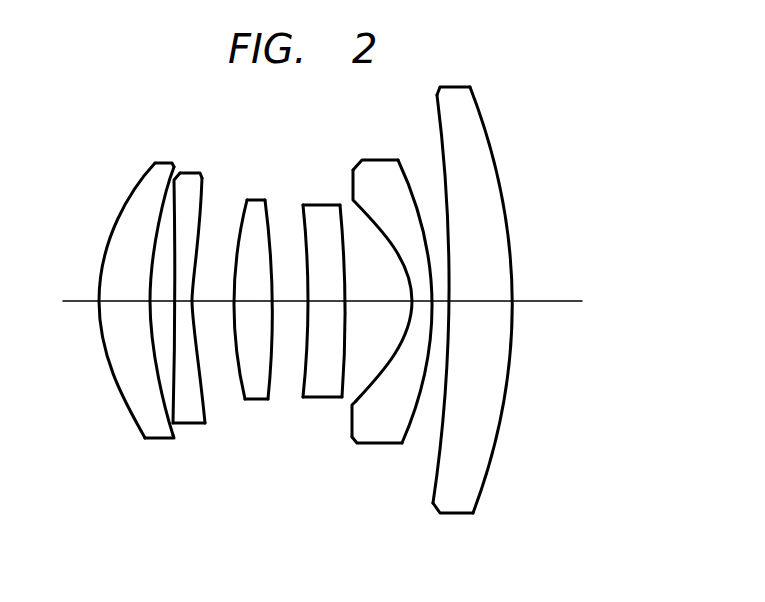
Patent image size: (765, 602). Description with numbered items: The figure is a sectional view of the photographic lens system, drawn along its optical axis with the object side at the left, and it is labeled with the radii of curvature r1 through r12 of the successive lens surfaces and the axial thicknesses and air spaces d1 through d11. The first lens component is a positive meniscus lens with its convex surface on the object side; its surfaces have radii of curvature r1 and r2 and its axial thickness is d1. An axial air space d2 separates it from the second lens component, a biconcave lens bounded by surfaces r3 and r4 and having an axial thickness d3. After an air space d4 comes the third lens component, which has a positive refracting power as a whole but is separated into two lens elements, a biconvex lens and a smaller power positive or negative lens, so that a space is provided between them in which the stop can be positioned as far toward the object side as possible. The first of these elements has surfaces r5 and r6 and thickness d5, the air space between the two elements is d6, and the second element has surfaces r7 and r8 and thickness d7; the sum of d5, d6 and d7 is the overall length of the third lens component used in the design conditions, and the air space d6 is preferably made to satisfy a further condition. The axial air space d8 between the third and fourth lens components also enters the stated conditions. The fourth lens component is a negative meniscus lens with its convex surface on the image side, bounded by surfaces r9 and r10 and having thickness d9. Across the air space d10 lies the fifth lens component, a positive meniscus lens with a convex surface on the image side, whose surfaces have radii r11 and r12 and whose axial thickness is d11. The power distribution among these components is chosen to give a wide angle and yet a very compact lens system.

The axial thickness of first lens d1 is at (112, 300).
The axial air space between first and second lenses d2 is at (158, 300).
The axial thickness of second lens d3 is at (183, 300).
The axial air space between second and third lenses d4 is at (210, 300).
The axial thickness of first element of third lens component d5 is at (252, 301).
The air space between the two lens elements of the third lens component d6 is at (290, 301).
The axial thickness of second element of third lens component d7 is at (324, 301).
The axial air space between third and fourth lens components d8 is at (373, 301).
The axial thickness of fourth lens d9 is at (420, 301).
The axial air space between fourth and fifth lenses d10 is at (440, 301).
The axial thickness of fifth lens d11 is at (480, 301).
The radius of curvature of first lens surface r1 is at (133, 423).
The radius of curvature of second lens surface r2 is at (175, 433).
The radius of curvature of third lens surface r3 is at (173, 390).
The radius of curvature of fourth lens surface r4 is at (207, 412).
The radius of curvature of fifth lens surface r5 is at (244, 396).
The radius of curvature of sixth lens surface r6 is at (271, 401).
The radius of curvature of seventh lens surface r7 is at (303, 395).
The radius of curvature of eighth lens surface r8 is at (345, 397).
The radius of curvature of ninth lens surface r9 is at (352, 410).
The radius of curvature of tenth lens surface r10 is at (405, 445).
The radius of curvature of eleventh lens surface r11 is at (432, 500).
The radius of curvature of twelfth lens surface r12 is at (480, 511).